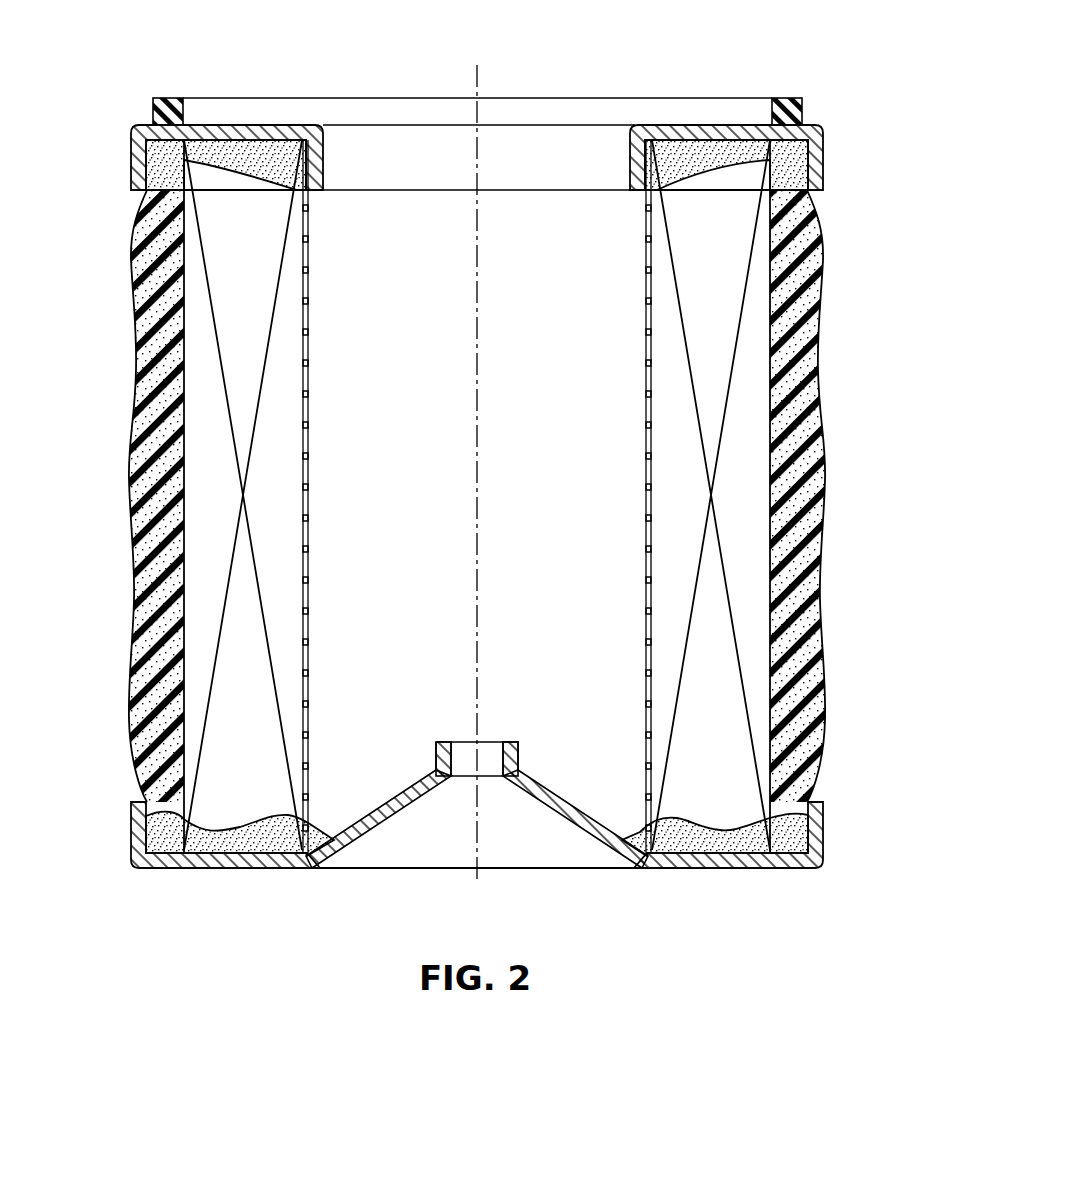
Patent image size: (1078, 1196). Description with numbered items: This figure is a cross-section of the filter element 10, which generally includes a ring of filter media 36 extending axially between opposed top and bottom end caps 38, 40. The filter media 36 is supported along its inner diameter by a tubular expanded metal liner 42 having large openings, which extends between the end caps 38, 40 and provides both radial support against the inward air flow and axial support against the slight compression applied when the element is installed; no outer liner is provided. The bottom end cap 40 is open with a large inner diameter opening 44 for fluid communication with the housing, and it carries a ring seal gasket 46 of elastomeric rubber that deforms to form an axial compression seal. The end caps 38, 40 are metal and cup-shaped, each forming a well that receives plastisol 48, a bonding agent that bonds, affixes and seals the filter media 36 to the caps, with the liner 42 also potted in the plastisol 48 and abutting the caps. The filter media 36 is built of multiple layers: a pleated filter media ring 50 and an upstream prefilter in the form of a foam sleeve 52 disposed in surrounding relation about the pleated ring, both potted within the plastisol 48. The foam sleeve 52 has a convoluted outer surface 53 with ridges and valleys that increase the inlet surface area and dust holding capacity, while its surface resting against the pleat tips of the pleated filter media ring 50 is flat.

The filter element 10 is at (140, 932).
The filter media 36 is at (196, 334).
The top end cap 38 is at (271, 870).
The bottom end cap 40 is at (232, 138).
The expanded metal liner 42 is at (310, 238).
The inner diameter opening 44 is at (323, 162).
The ring seal gasket 46 is at (787, 98).
The plastisol 48 is at (680, 140).
The pleated filter media ring 50 is at (718, 190).
The foam sleeve 52 is at (812, 281).
The convoluted outer surface 53 is at (813, 483).